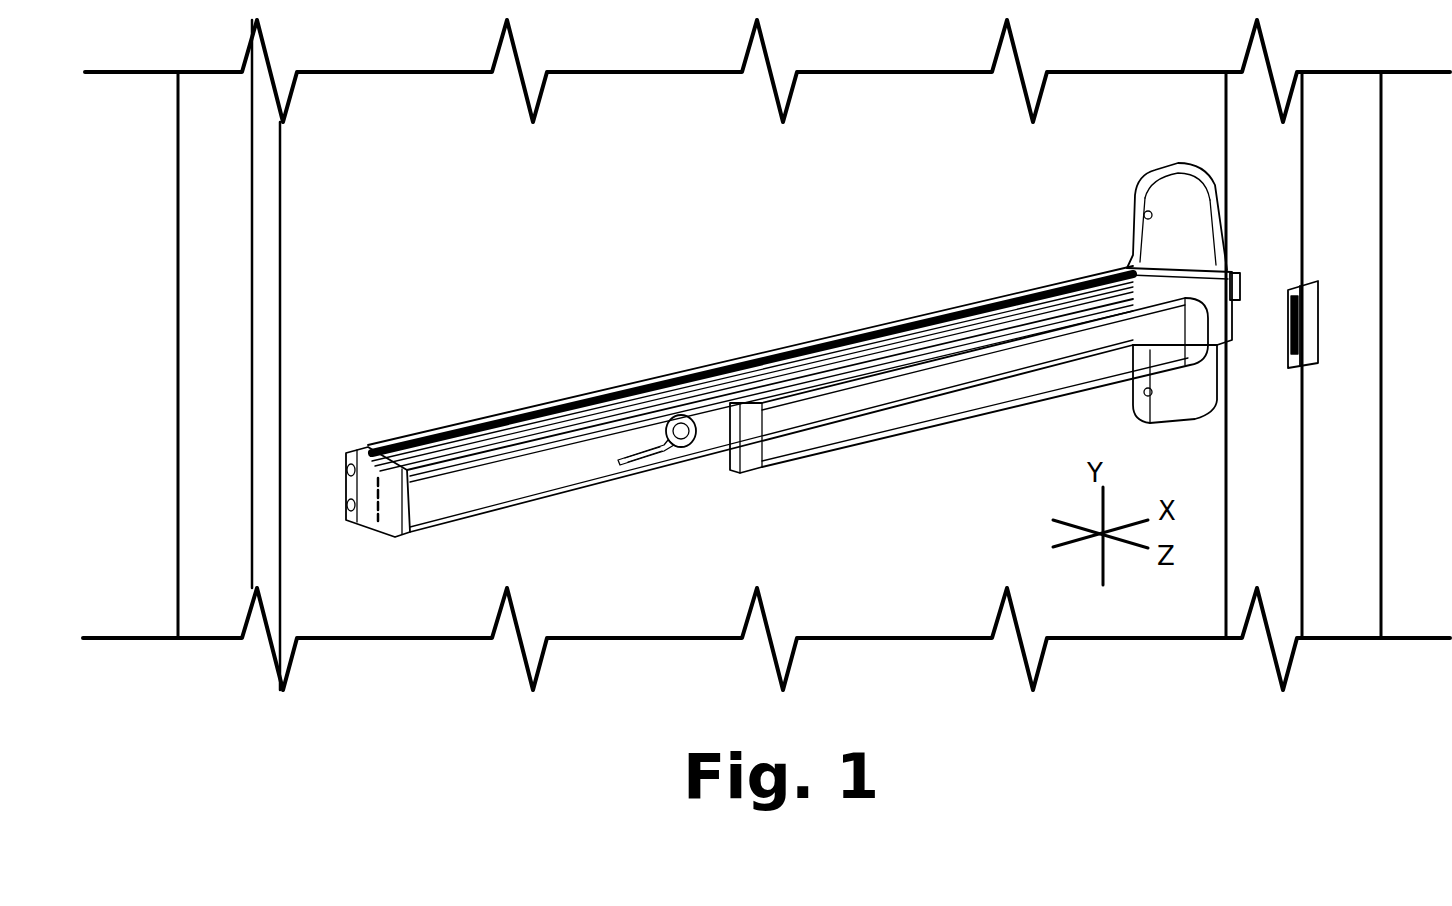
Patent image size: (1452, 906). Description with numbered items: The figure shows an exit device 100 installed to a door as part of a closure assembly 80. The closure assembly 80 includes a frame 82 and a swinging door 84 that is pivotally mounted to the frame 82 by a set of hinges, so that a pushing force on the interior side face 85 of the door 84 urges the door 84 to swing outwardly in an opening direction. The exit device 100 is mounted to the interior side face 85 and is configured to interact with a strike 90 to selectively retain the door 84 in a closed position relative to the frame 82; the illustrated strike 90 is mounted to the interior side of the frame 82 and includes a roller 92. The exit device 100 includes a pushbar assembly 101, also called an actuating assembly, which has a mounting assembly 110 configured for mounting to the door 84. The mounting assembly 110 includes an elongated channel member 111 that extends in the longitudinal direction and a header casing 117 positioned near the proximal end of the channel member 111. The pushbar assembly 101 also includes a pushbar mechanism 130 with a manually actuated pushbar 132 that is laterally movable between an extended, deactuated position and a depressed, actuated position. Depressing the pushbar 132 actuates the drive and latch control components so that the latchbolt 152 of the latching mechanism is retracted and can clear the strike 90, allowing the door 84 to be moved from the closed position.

The closure assembly 80 is at (148, 180).
The frame 82 is at (198, 217).
The swinging door 84 is at (298, 272).
The interior side face 85 is at (325, 337).
The strike 90 is at (1334, 266).
The roller 92 is at (1292, 330).
The exit device 100 is at (582, 251).
The pushbar assembly 101 is at (758, 292).
The mounting assembly 110 is at (474, 400).
The elongated channel member 111 is at (613, 390).
The header casing 117 is at (1172, 171).
The pushbar mechanism 130 is at (764, 495).
The pushbar 132 is at (893, 417).
The latchbolt 152 is at (1243, 288).